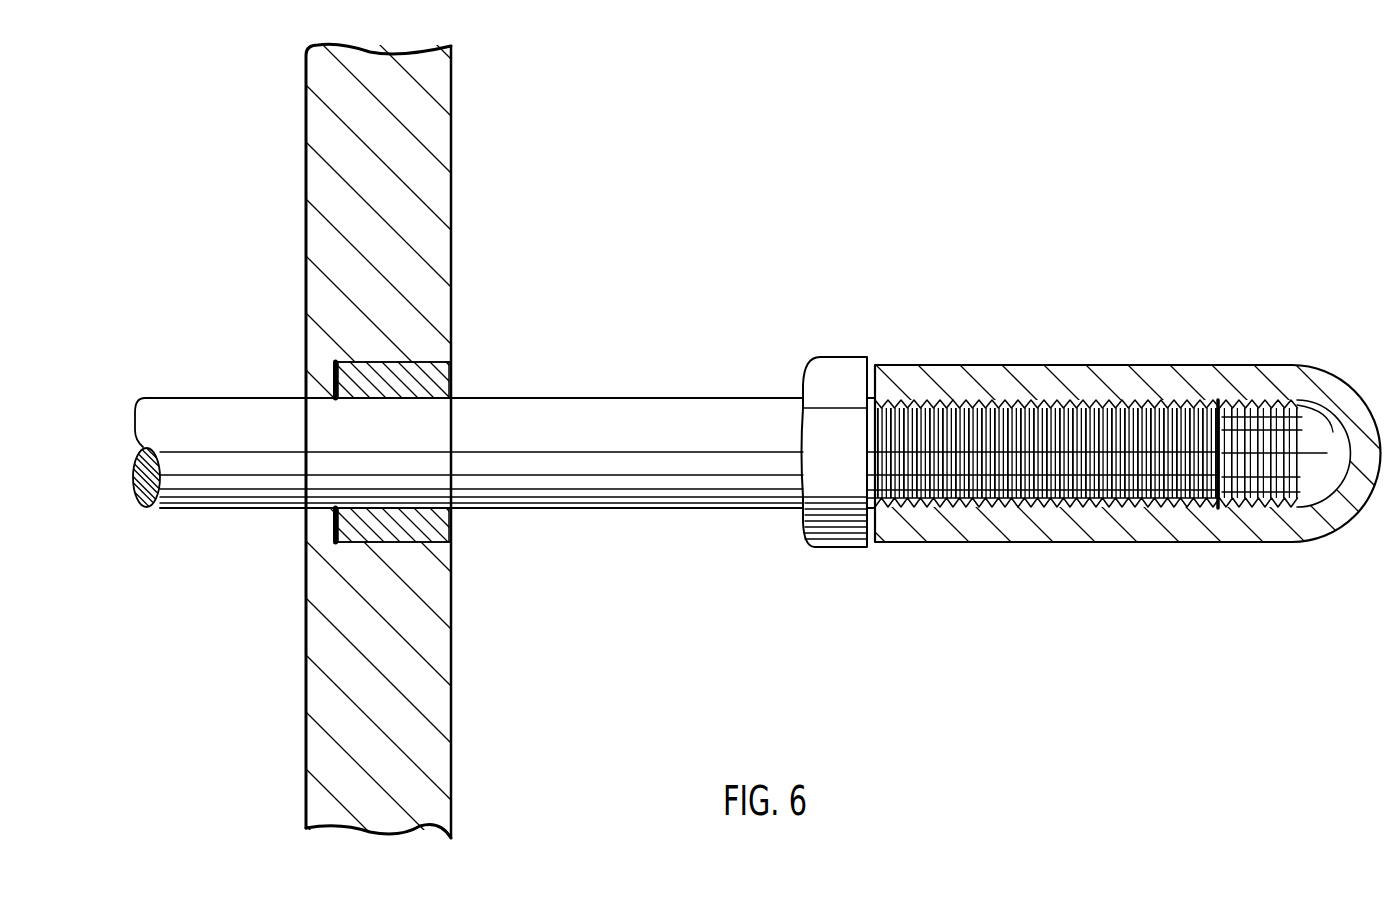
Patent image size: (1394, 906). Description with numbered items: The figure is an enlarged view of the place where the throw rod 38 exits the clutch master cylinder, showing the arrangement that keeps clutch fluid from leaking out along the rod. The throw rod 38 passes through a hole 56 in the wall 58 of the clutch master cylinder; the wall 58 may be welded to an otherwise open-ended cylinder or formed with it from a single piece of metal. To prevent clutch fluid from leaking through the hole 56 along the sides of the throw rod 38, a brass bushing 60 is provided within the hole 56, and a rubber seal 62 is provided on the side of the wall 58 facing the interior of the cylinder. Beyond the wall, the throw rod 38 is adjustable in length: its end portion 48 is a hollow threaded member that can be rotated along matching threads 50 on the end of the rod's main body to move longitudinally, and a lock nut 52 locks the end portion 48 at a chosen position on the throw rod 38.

The throw rod 38 is at (728, 398).
The end portion 48 is at (1170, 365).
The matching threads 50 is at (927, 500).
The lock nut 52 is at (843, 357).
The hole 56 is at (455, 510).
The wall 58 is at (452, 731).
The brass bushing 60 is at (425, 362).
The rubber seal 62 is at (307, 530).